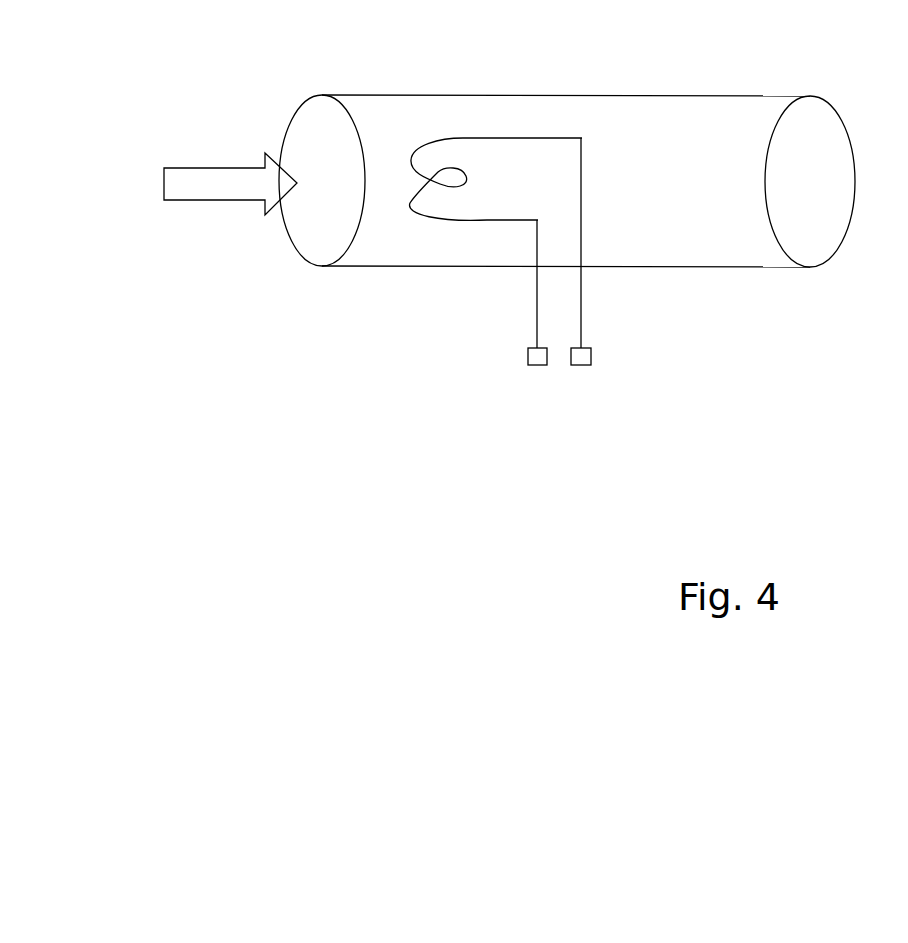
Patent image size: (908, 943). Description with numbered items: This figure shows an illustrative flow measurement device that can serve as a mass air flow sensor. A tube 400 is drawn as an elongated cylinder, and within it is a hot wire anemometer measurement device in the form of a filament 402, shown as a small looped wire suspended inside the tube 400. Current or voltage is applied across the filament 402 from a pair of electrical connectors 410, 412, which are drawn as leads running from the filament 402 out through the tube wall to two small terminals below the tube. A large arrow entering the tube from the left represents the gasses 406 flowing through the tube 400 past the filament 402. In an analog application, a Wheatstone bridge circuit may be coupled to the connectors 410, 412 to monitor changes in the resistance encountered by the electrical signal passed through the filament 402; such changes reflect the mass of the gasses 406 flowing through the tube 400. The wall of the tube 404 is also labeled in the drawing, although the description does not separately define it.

The tube 400 is at (561, 180).
The filament 402 is at (463, 139).
The tube / cylindrical housing 404 is at (561, 219).
The gasses 406 is at (208, 154).
The electrical connector 410 is at (481, 292).
The electrical connector 412 is at (633, 251).